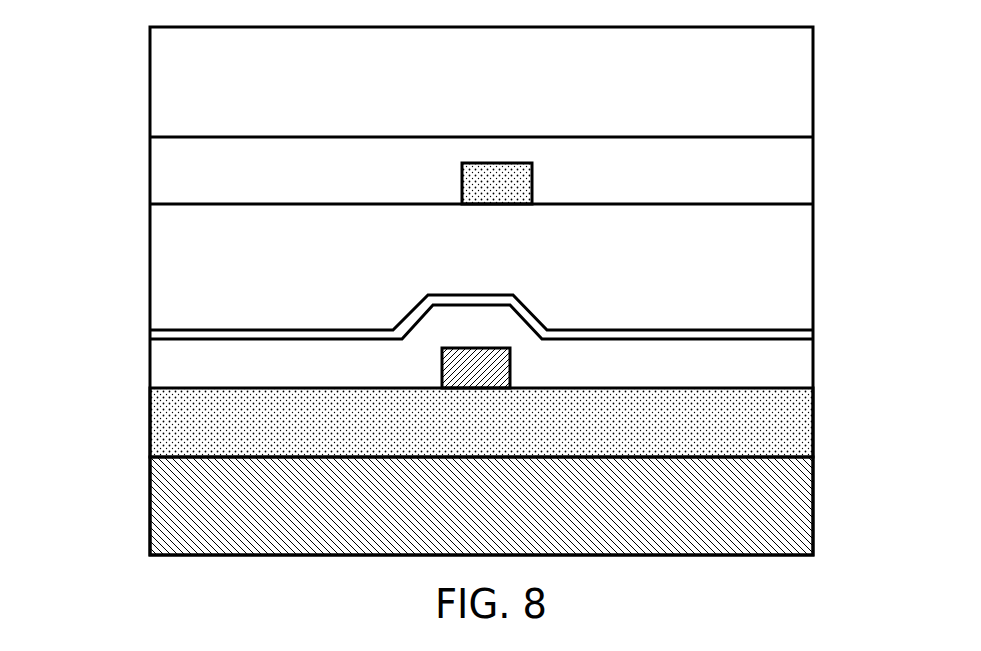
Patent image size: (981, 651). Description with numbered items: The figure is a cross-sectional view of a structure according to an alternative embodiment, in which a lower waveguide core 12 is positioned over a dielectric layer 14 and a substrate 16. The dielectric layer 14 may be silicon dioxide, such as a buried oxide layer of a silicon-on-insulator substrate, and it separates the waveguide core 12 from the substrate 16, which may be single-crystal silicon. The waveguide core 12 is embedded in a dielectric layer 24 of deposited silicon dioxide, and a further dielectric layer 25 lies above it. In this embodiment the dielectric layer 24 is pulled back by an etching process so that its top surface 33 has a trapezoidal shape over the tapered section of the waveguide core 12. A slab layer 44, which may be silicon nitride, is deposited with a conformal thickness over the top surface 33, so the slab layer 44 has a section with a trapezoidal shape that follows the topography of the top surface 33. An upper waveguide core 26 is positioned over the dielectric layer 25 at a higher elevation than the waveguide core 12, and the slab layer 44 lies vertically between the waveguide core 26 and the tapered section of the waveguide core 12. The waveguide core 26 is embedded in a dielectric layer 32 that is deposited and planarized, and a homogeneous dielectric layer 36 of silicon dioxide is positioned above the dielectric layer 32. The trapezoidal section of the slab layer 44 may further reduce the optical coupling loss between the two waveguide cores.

The waveguide core 12 is at (480, 373).
The dielectric layer 14 is at (765, 433).
The substrate 16 is at (773, 505).
The dielectric layer 24 is at (197, 374).
The dielectric layer 25 is at (197, 260).
The waveguide core 26 is at (508, 185).
The dielectric layer 32 is at (773, 177).
The top surface 33 is at (640, 339).
The dielectric layer 36 is at (769, 86).
The slab layer 44 is at (197, 335).